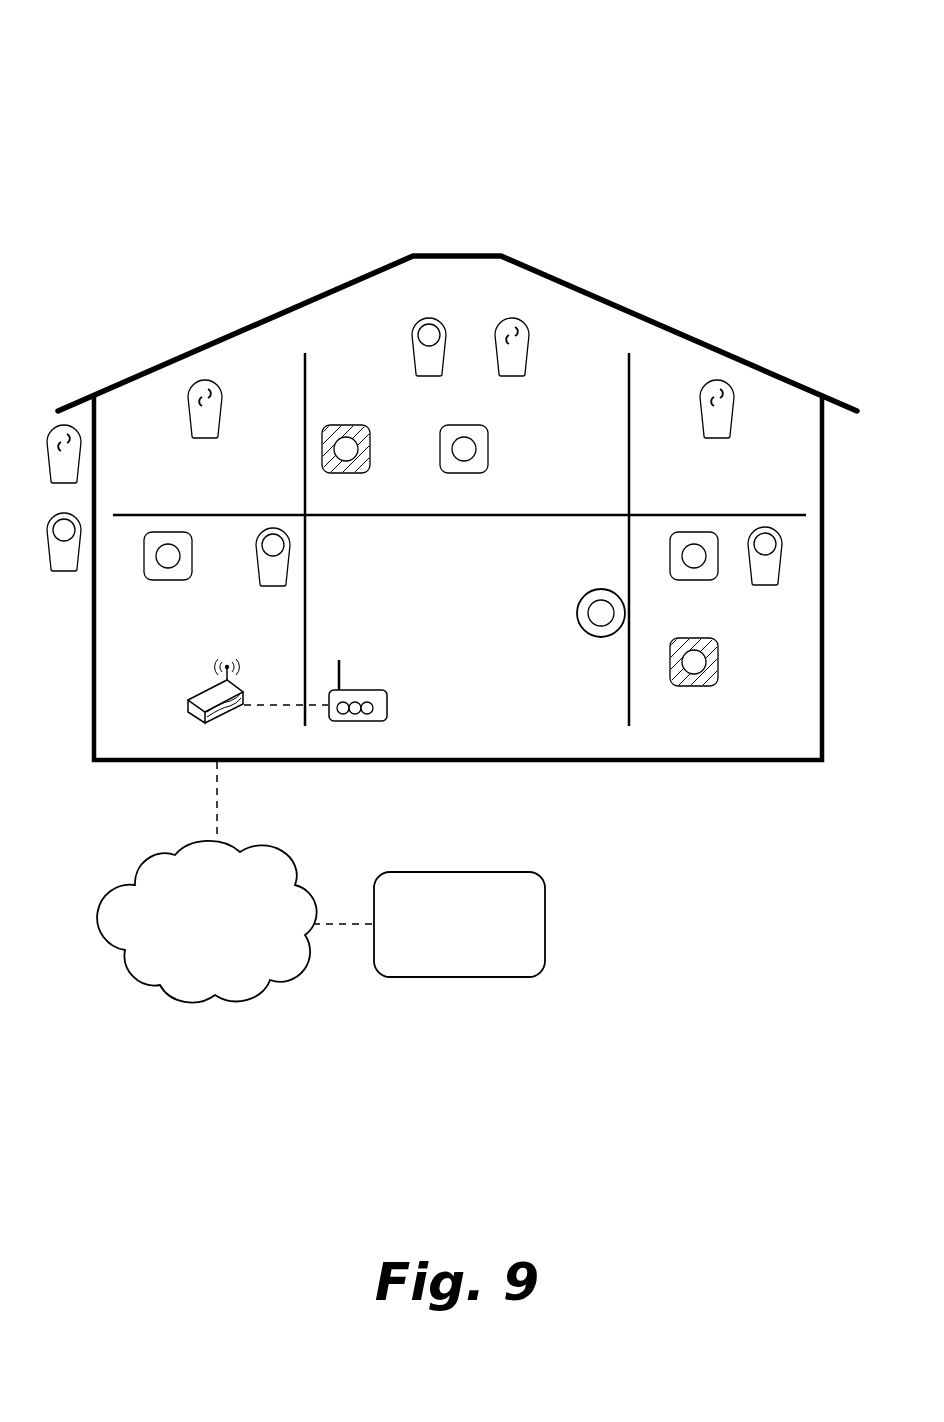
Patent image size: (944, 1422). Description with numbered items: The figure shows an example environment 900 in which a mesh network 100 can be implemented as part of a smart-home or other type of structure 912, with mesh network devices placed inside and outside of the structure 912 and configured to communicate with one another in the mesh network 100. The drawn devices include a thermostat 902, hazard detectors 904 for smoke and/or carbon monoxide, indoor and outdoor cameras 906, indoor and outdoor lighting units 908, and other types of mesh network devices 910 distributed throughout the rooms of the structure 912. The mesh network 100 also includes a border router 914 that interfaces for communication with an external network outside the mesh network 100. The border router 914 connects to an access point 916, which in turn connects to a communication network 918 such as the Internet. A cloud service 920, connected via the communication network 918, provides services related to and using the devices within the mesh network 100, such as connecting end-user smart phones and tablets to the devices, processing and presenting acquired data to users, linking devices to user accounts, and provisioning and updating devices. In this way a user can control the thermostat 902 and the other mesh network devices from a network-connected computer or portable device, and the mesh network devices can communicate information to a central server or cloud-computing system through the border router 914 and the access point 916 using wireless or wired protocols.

The example environment 900 is at (175, 62).
The mesh network 100 is at (370, 352).
The structure 912 is at (217, 342).
The thermostat 902 is at (583, 663).
The hazard detectors 904 is at (150, 605).
The cameras 906 is at (46, 593).
The lighting units 908 is at (46, 505).
The mesh network devices 910 is at (328, 498).
The border router 914 is at (339, 745).
The access point 916 is at (199, 752).
The communication network 918 is at (197, 978).
The cloud service 920 is at (441, 962).